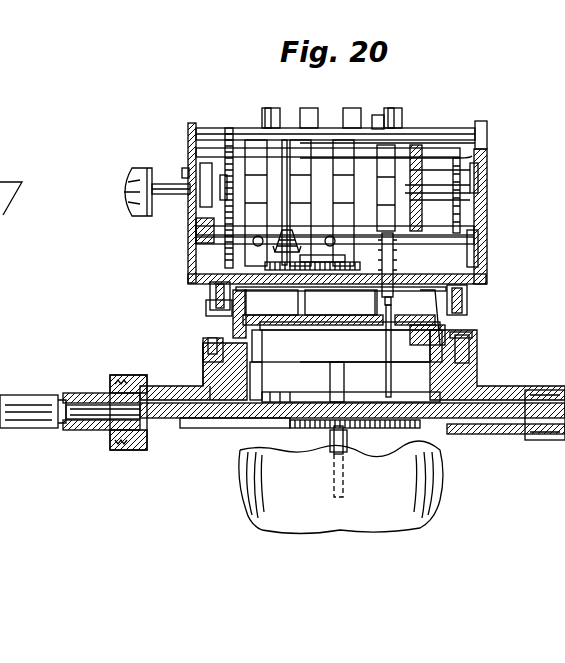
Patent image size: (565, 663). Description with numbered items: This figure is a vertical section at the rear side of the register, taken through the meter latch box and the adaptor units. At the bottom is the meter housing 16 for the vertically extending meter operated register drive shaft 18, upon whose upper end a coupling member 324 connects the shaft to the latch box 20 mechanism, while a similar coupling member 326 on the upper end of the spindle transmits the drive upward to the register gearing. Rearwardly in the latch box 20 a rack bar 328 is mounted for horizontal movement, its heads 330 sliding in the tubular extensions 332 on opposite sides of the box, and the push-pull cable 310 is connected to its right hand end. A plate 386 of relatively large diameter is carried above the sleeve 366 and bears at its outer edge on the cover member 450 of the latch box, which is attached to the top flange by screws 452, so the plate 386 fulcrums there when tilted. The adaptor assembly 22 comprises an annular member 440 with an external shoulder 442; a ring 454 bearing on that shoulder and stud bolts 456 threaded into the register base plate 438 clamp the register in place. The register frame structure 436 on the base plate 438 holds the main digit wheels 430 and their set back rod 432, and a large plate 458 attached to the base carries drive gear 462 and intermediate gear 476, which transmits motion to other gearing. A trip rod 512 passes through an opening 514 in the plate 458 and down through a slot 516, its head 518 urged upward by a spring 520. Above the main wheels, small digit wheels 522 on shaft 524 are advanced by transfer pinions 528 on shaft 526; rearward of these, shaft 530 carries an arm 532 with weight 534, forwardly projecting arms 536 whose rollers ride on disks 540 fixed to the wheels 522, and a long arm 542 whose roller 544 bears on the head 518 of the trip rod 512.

The housing 16 is at (440, 492).
The register drive shaft 18 is at (346, 478).
The latch box 20 is at (212, 378).
The adaptor assembly 22 is at (448, 318).
The push-pull cable 310 is at (5, 395).
The coupling member 324 is at (332, 452).
The coupling member 326 is at (324, 352).
The rack bar 328 is at (375, 408).
The heads 330 is at (165, 432).
The tubular extensions 332 is at (478, 380).
The sleeve 366 is at (330, 374).
The plate 386 is at (292, 370).
The main digit wheels 430 is at (246, 140).
The set back rod 432 is at (168, 182).
The frame structure 436 is at (188, 212).
The base plate 438 is at (196, 256).
The annular member 440 is at (233, 320).
The annular shoulder 442 is at (465, 297).
The cover member 450 is at (472, 346).
The screws 452 is at (203, 342).
The ring 454 is at (206, 306).
The stud bolts 456 is at (210, 294).
The plate 458 is at (341, 301).
The gear 462 is at (341, 302).
The intermediate gear 476 is at (196, 240).
The trip rod 512 is at (468, 268).
The opening 514 is at (404, 298).
The slot 516 is at (398, 350).
The head 518 is at (476, 210).
The spring 520 is at (478, 232).
The digit wheels 522 is at (350, 113).
The shaft 524 is at (458, 131).
The shaft 526 is at (481, 121).
The transfer pinions 528 is at (378, 115).
The shaft 530 is at (472, 140).
The arm 532 is at (478, 175).
The weight 534 is at (478, 192).
The arms 536 is at (300, 113).
The disks 540 is at (272, 108).
The long arm 542 is at (470, 157).
The roller 544 is at (405, 200).